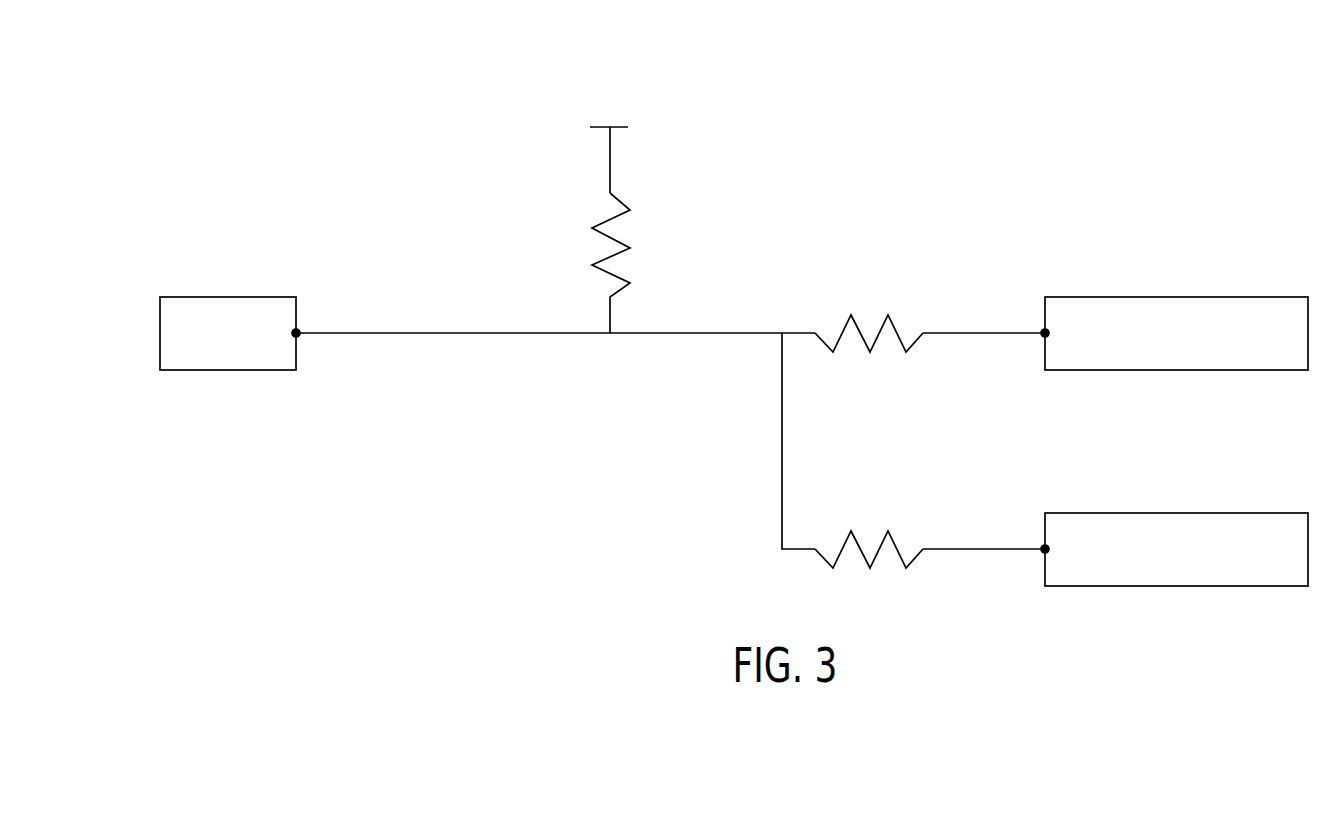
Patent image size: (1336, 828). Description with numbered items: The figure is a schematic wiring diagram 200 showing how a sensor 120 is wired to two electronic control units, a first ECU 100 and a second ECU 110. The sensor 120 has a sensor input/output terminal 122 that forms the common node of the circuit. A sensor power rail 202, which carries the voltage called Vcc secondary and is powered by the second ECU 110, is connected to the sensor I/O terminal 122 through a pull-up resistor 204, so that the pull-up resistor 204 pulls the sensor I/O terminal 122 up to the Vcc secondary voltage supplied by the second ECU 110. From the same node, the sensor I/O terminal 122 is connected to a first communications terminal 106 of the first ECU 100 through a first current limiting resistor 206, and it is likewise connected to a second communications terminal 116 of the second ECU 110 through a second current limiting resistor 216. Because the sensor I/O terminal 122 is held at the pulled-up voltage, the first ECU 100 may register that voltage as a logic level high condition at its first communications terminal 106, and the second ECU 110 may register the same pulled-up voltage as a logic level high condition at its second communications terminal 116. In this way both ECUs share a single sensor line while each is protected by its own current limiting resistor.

The schematic wiring diagram 200 is at (370, 138).
The sensor 120 is at (228, 297).
The sensor input/output (I/O) terminal 122 is at (300, 331).
The sensor power rail 202 is at (612, 130).
The pull-up resistor 204 is at (598, 225).
The second current limiting resistor 216 is at (843, 330).
The second communications terminal 116 is at (1042, 331).
The second ECU 110 is at (1176, 297).
The first current limiting resistor 206 is at (843, 546).
The first communications terminal 106 is at (1042, 547).
The first ECU 100 is at (1176, 513).